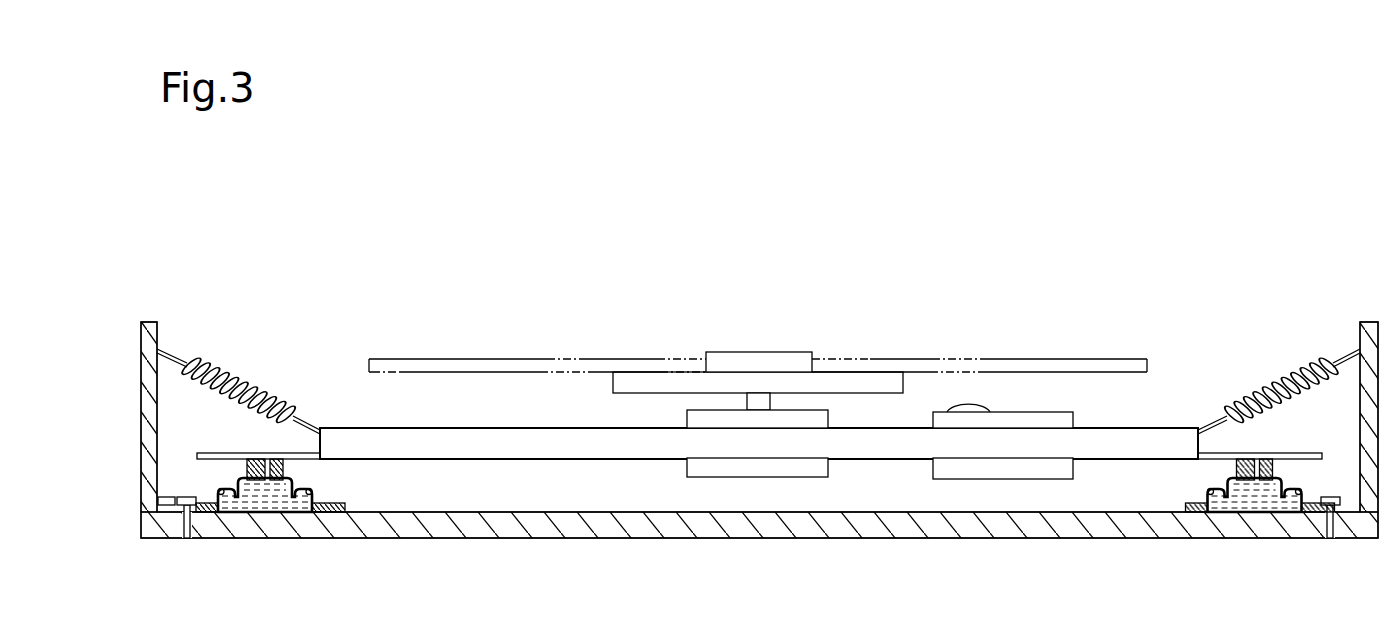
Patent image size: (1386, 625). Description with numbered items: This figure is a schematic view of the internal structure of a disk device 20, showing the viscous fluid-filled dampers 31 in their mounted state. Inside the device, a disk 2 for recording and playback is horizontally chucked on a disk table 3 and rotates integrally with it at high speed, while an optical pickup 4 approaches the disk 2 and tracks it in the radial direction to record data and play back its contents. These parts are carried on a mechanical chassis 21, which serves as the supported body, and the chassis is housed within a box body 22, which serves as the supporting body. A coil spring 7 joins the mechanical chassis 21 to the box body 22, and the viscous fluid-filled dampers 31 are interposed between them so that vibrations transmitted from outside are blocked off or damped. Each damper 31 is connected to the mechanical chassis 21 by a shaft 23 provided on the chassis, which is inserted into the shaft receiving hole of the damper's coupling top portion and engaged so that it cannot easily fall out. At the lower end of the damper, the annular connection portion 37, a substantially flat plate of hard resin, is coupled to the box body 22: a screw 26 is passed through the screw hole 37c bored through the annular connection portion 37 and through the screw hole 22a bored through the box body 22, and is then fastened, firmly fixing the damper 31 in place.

The disk device 20 is at (980, 234).
The disk 2 is at (492, 357).
The disk table 3 is at (613, 385).
The coil spring 7 is at (228, 372).
The shaft 23 is at (288, 456).
The box body 22 is at (141, 356).
The screw 26 is at (183, 495).
The annular connection portion 37 is at (167, 493).
The screw hole 37c is at (178, 512).
The screw hole 22a is at (187, 530).
The viscous fluid-filled damper 31 is at (366, 501).
The mechanical chassis 21 is at (520, 460).
The optical pickup 4 is at (933, 398).